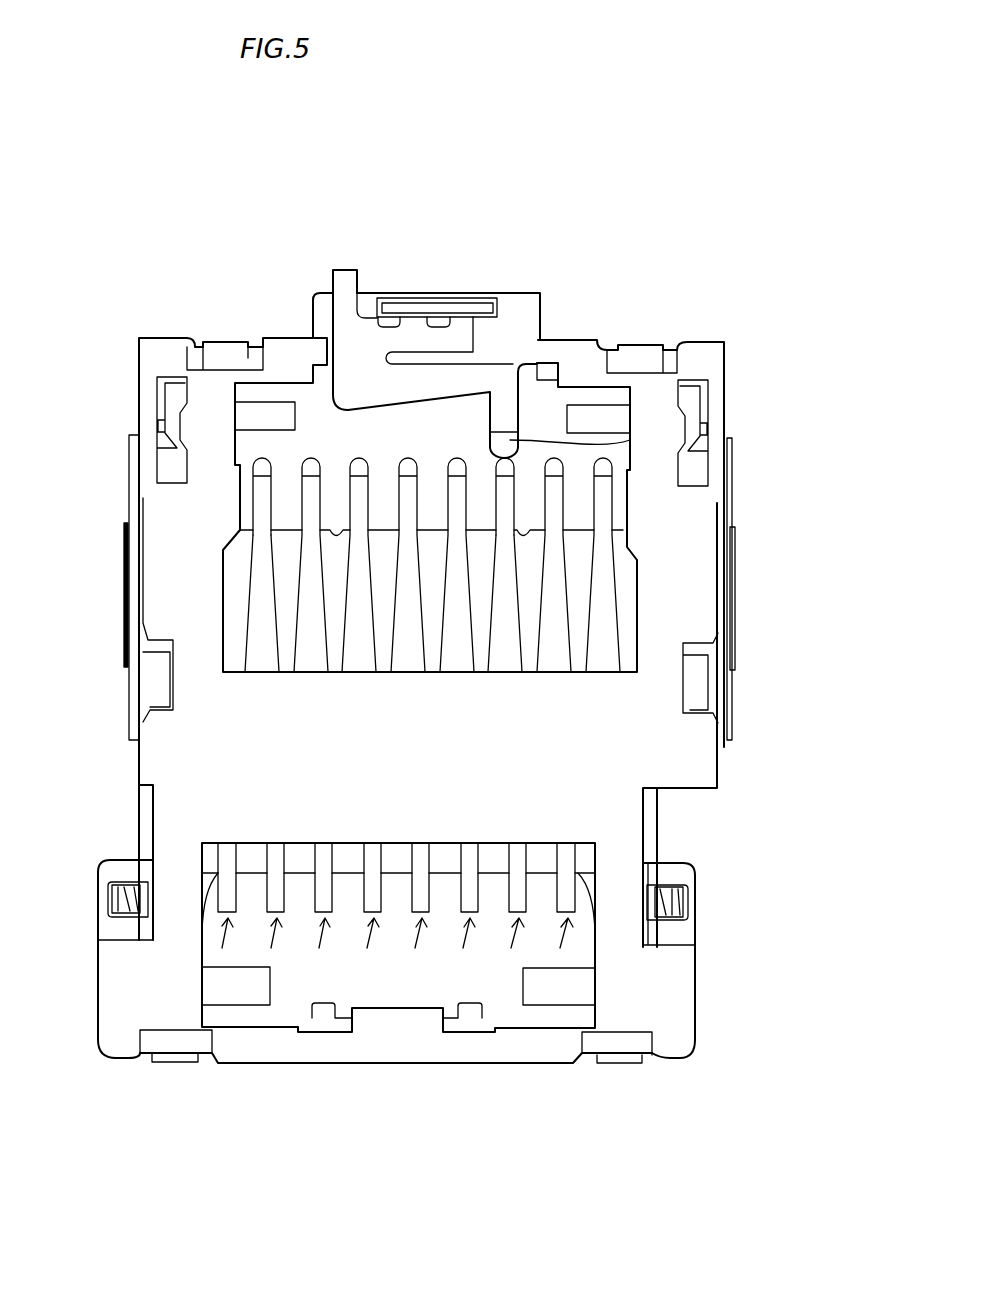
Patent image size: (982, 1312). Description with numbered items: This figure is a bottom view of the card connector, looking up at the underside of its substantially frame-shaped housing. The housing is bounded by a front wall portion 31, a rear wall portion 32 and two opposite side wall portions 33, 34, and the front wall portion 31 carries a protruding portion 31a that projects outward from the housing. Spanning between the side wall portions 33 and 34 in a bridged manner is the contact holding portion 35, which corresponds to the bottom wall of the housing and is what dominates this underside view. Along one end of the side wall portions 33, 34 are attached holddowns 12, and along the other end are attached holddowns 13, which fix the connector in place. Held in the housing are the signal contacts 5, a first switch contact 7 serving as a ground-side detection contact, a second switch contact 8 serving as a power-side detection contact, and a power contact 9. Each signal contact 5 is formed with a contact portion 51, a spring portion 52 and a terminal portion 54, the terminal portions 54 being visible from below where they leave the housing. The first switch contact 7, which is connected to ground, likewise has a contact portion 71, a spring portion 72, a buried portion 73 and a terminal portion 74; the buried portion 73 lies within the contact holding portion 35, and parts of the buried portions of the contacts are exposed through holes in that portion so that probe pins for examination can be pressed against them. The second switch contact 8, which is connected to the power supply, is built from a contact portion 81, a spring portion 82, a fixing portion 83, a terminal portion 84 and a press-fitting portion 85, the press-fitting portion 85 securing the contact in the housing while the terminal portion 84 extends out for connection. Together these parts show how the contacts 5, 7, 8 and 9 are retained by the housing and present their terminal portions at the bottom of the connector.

The signal contact 5 is at (271, 948).
The first switch contact 7 is at (463, 948).
The second switch contact 8 is at (417, 278).
The power contact 9 is at (319, 948).
The holddown 12 is at (272, 415).
The holddown 13 is at (218, 990).
The front wall portion 31 is at (560, 347).
The protruding portion 31a is at (513, 305).
The rear wall portion 32 is at (415, 1048).
The side wall portion 33 is at (690, 618).
The side wall portion 34 is at (160, 602).
The contact holding portion 35 is at (440, 750).
The contact portion 51 is at (255, 483).
The spring portion 52 is at (255, 580).
The terminal portion 54 is at (218, 862).
The contact portion 71 is at (503, 490).
The spring portion 72 is at (503, 597).
The buried portion 73 is at (415, 948).
The terminal portion 74 is at (578, 878).
The contact portion 81 is at (630, 440).
The spring portion 82 is at (440, 382).
The fixing portion 83 is at (400, 340).
The terminal portion 84 is at (346, 280).
The press-fitting portion 85 is at (430, 355).